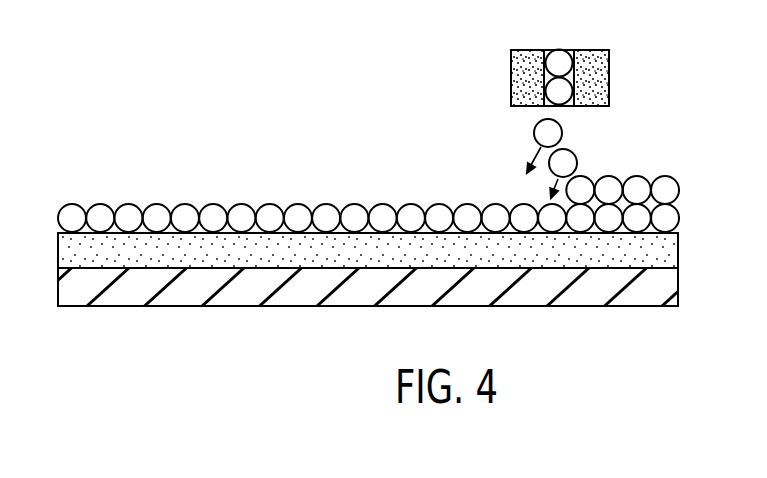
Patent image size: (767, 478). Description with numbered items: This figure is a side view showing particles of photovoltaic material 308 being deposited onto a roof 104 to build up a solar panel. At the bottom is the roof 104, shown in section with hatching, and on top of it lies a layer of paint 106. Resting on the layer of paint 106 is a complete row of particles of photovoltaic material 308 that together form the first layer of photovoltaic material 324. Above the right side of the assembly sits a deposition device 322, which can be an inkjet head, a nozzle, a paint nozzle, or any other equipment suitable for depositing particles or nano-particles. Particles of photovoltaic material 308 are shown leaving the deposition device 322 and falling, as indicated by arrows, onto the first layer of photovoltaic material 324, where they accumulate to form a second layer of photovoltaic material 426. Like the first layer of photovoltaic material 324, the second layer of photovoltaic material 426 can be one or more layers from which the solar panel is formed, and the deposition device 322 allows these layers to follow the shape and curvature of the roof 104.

The roof 104 is at (668, 290).
The layer of paint 106 is at (668, 255).
The photovoltaic material 308 is at (395, 119).
The deposition device 322 is at (598, 68).
The first layer of photovoltaic material 324 is at (668, 222).
The second layer of photovoltaic material 426 is at (665, 185).